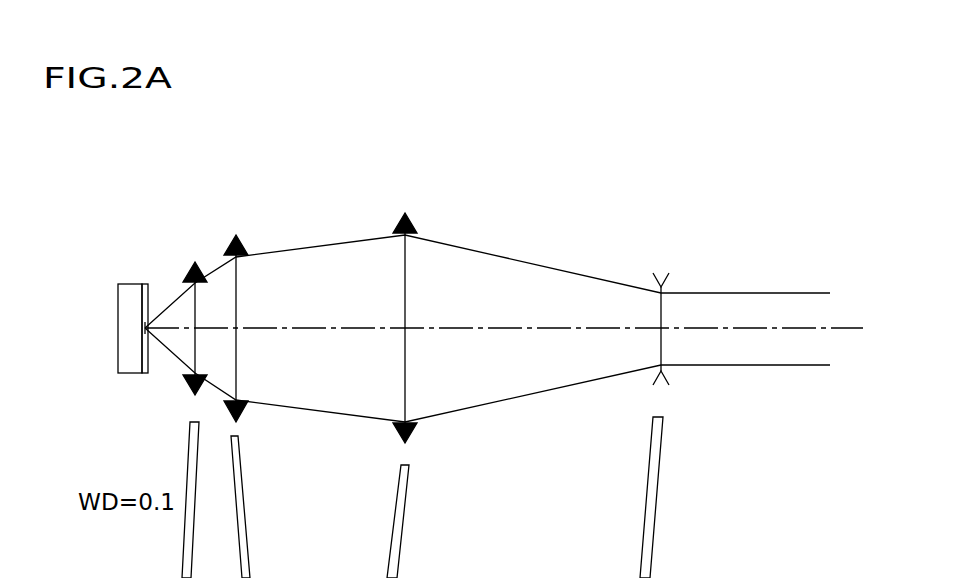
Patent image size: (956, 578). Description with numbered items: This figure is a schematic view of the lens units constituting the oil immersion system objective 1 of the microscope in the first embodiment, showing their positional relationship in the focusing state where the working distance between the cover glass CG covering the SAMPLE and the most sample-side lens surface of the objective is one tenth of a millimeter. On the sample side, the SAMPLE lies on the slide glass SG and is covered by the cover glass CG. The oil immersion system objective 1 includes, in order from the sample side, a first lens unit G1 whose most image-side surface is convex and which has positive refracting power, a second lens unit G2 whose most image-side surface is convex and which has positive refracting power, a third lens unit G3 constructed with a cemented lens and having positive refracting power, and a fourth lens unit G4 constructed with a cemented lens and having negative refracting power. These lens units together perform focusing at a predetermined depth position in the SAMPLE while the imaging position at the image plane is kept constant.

The oil immersion system objective 1 is at (705, 148).
The first lens unit G1 is at (201, 270).
The second lens unit G2 is at (243, 241).
The third lens unit G3 is at (412, 216).
The fourth lens unit G4 is at (655, 281).
The slide glass SG is at (128, 290).
The cover glass CG is at (147, 290).
The sample SAMPLE is at (138, 360).